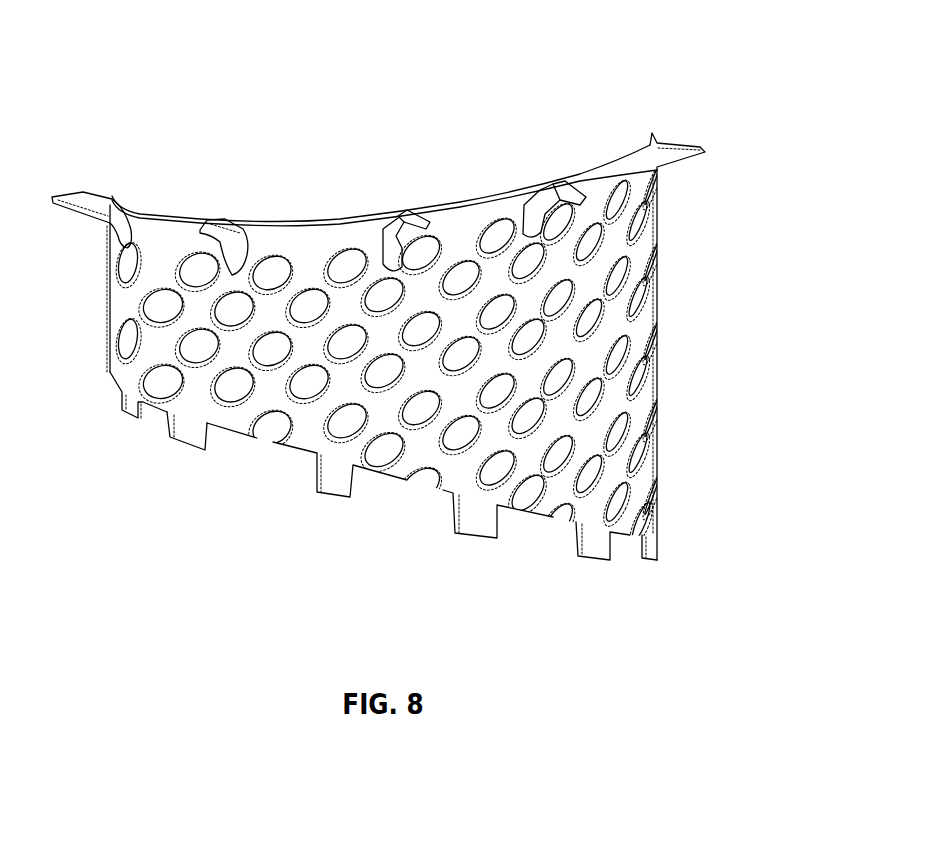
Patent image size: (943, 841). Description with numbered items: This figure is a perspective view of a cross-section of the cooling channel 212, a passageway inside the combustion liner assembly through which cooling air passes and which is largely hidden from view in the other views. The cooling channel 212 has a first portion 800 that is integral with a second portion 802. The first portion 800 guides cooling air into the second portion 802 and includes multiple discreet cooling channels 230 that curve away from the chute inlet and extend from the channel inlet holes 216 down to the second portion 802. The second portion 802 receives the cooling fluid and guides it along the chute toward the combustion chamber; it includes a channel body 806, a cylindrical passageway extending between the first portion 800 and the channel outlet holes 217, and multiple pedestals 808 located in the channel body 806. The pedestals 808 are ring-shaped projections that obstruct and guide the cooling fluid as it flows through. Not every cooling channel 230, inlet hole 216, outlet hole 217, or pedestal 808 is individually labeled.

The cooling channel 212 is at (622, 98).
The first portion 800 is at (712, 130).
The second portion 802 is at (712, 213).
The cooling channels 230 is at (100, 210).
The channel inlet holes 216 is at (417, 222).
The pedestals 808 is at (125, 337).
The channel body 806 is at (112, 373).
The channel outlet holes 217 is at (177, 441).